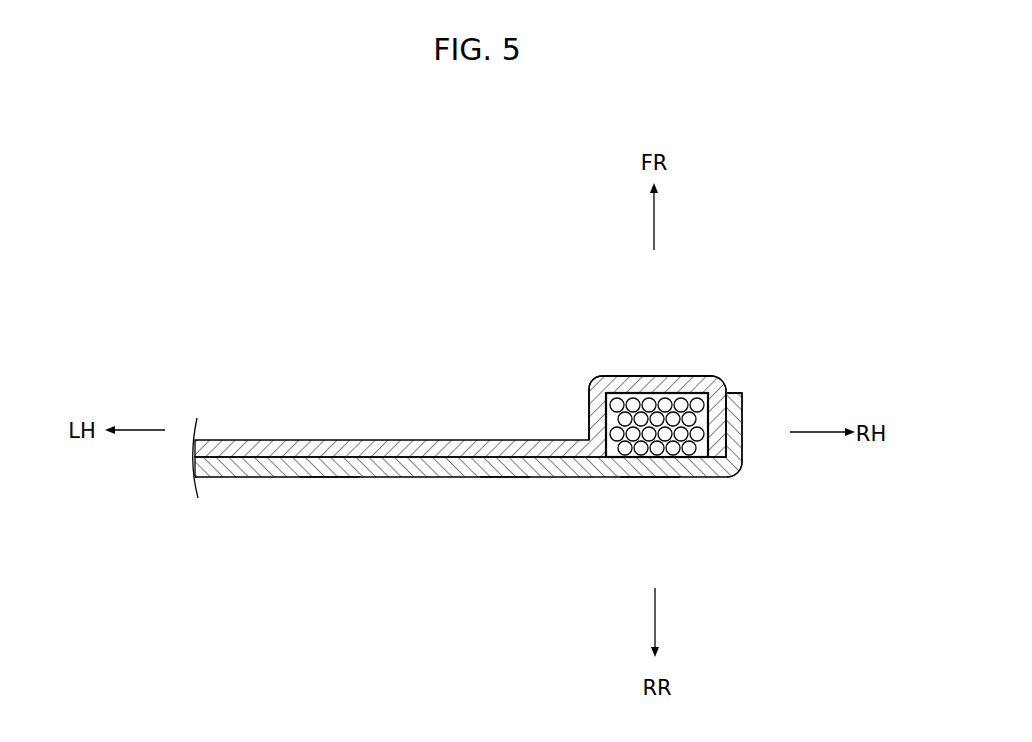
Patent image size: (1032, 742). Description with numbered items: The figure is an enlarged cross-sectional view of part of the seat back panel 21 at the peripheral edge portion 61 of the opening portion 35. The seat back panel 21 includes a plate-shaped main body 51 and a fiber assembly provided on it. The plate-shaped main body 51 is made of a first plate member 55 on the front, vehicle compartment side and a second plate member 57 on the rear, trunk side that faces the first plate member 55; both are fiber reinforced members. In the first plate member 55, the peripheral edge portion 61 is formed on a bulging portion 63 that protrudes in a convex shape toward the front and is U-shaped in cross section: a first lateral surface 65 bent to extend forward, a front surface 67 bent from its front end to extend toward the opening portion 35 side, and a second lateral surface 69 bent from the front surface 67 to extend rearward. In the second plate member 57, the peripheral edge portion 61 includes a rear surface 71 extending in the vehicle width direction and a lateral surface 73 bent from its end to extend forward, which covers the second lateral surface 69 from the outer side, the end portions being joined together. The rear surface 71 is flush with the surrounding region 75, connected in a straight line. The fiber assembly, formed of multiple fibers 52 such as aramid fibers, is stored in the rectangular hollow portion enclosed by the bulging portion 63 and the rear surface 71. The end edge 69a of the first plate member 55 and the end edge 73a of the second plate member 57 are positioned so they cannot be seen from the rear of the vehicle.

The seat back panel 21 is at (501, 420).
The opening portion 35 is at (758, 433).
The plate-shaped main body 51 is at (417, 479).
The fibers 52 is at (614, 497).
The first plate member 55 is at (348, 435).
The second plate member 57 is at (330, 479).
The peripheral edge portion 61 is at (664, 374).
The bulging portion 63 is at (657, 416).
The first lateral surface 65 is at (592, 420).
The front surface 67 is at (626, 377).
The second lateral surface 69 is at (693, 466).
The end edge 69a is at (708, 466).
The rear surface 71 is at (646, 466).
The lateral surface 73 is at (742, 415).
The end edge 73a is at (728, 393).
The surrounding region 75 is at (505, 473).